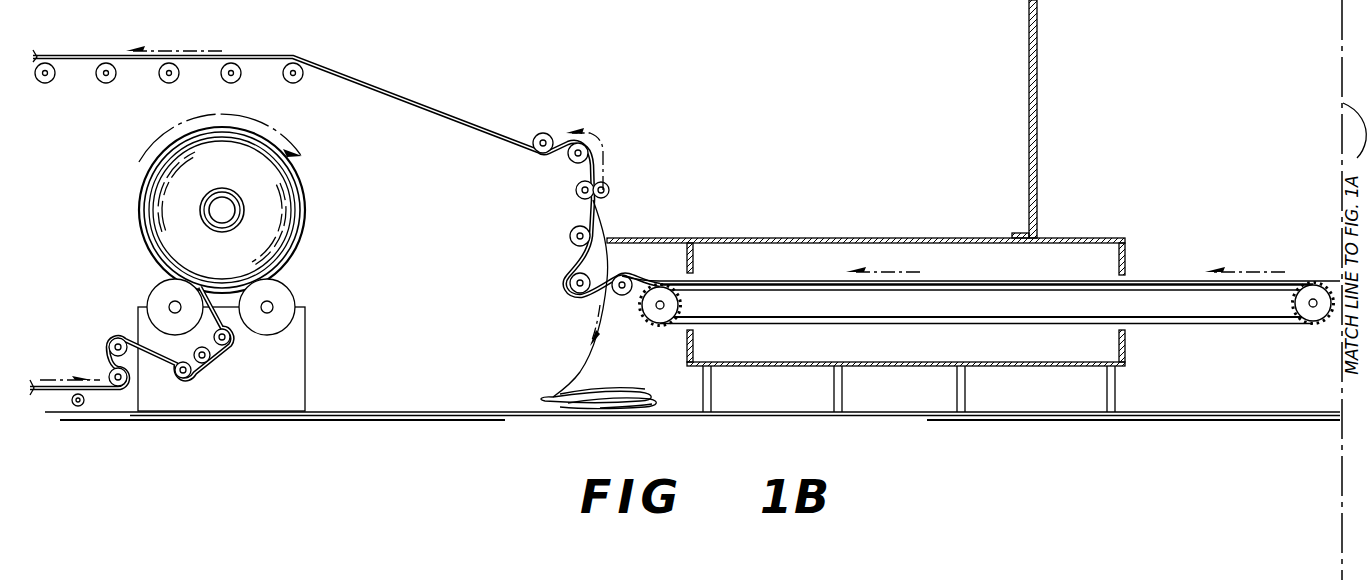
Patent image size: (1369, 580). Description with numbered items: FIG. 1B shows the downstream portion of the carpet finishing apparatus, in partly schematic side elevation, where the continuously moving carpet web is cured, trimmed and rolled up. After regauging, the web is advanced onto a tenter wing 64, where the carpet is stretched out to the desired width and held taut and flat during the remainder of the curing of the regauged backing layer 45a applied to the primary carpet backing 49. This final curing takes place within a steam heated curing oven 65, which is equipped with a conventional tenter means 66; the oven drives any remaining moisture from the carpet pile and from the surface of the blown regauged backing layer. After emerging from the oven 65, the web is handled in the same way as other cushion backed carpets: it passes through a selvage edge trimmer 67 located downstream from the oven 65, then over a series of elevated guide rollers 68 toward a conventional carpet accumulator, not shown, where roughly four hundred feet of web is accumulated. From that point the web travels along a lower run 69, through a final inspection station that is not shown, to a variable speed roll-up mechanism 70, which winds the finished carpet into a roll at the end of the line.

The regauged backing layer 45a is at (1333, 284).
The primary carpet backing 49 is at (1168, 282).
The tenter wing 64 is at (1216, 308).
The curing oven 65 is at (797, 246).
The tenter means 66 is at (895, 323).
The selvage edge trimmer 67 is at (608, 187).
The guide rollers 68 is at (50, 82).
The lower run 69 is at (62, 385).
The variable speed roll-up mechanism 70 is at (302, 283).